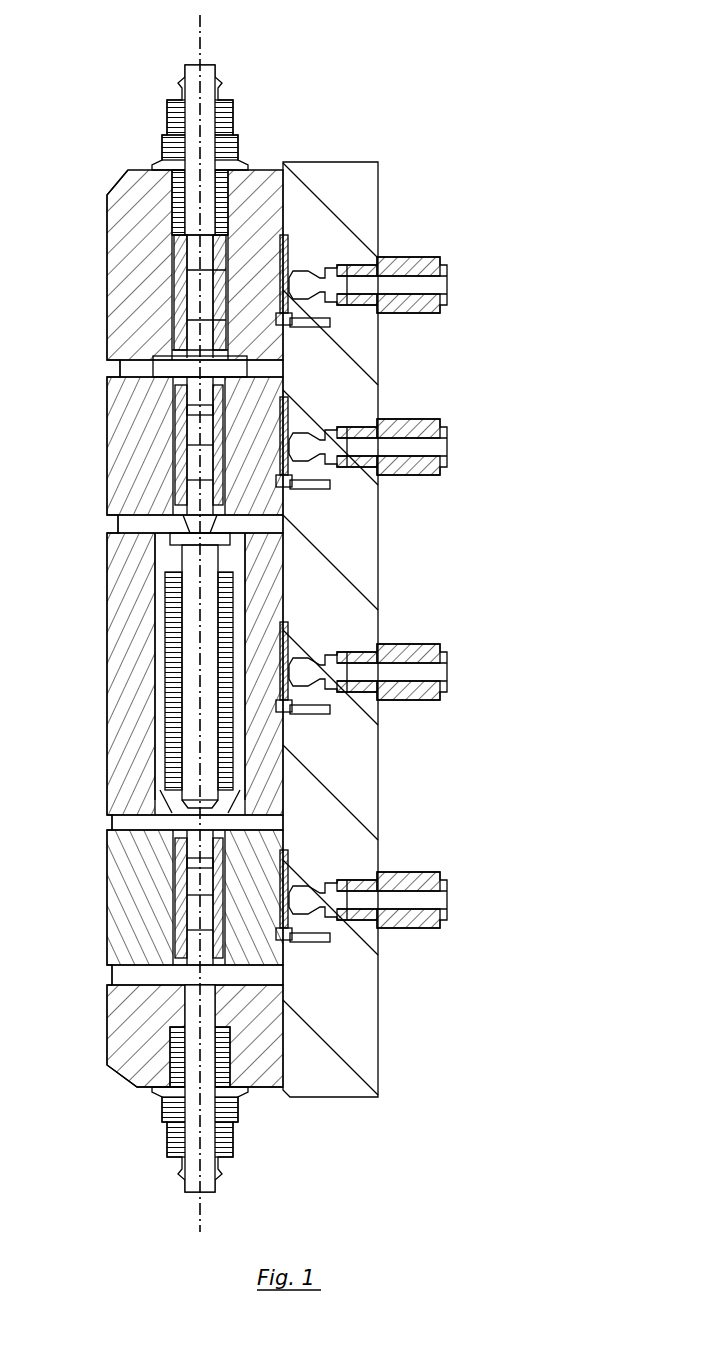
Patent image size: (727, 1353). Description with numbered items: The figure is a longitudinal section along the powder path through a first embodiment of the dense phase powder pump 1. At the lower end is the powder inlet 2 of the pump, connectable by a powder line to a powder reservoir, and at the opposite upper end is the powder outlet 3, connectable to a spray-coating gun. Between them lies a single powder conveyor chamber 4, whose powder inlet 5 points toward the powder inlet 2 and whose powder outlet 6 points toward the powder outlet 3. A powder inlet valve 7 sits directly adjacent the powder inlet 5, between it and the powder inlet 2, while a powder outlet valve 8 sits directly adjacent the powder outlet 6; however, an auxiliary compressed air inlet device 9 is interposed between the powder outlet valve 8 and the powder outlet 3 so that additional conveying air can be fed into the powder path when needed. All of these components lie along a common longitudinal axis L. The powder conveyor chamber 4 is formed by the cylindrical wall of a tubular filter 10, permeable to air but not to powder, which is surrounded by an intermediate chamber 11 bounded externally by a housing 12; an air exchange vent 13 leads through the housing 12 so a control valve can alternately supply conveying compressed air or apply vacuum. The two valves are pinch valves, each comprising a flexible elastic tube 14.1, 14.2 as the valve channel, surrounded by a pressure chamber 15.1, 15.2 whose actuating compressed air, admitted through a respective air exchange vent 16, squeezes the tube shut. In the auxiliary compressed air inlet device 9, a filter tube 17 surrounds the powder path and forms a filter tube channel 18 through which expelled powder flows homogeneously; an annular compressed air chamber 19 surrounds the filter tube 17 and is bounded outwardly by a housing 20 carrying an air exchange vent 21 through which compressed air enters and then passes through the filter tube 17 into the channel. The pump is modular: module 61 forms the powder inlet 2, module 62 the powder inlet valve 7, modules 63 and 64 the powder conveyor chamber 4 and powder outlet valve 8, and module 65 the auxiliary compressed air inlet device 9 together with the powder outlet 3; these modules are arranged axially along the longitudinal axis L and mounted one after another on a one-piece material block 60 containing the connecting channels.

The dense phase powder pump 1 is at (414, 90).
The powder inlet 2 is at (83, 985).
The powder outlet 3 is at (83, 70).
The powder conveyor chamber 4 is at (83, 540).
The powder inlet 5 is at (310, 817).
The powder outlet 6 is at (310, 515).
The powder inlet valve 7 is at (83, 825).
The powder outlet valve 8 is at (83, 370).
The auxiliary compressed air inlet device 9 is at (83, 240).
The tubular filter 10 is at (367, 676).
The intermediate chamber 11 is at (363, 681).
The housing 12 is at (366, 666).
The air exchange vent 13 is at (417, 668).
The flexible elastic tube 14.1 is at (358, 862).
The flexible elastic tube 14.2 is at (359, 407).
The pressure chamber 15.1 is at (386, 898).
The pressure chamber 15.2 is at (387, 445).
The air exchange vent 16 is at (378, 669).
The filter tube 17 is at (351, 292).
The filter tube channel 18 is at (350, 296).
The compressed air chamber 19 is at (363, 297).
The housing 20 is at (343, 361).
The air exchange vent 21 is at (388, 281).
The material block 60 is at (416, 629).
The module 61 is at (328, 1026).
The module 62 is at (334, 895).
The module 63 is at (342, 674).
The module 64 is at (343, 443).
The module 65 is at (342, 265).
The longitudinal axis L is at (297, 623).